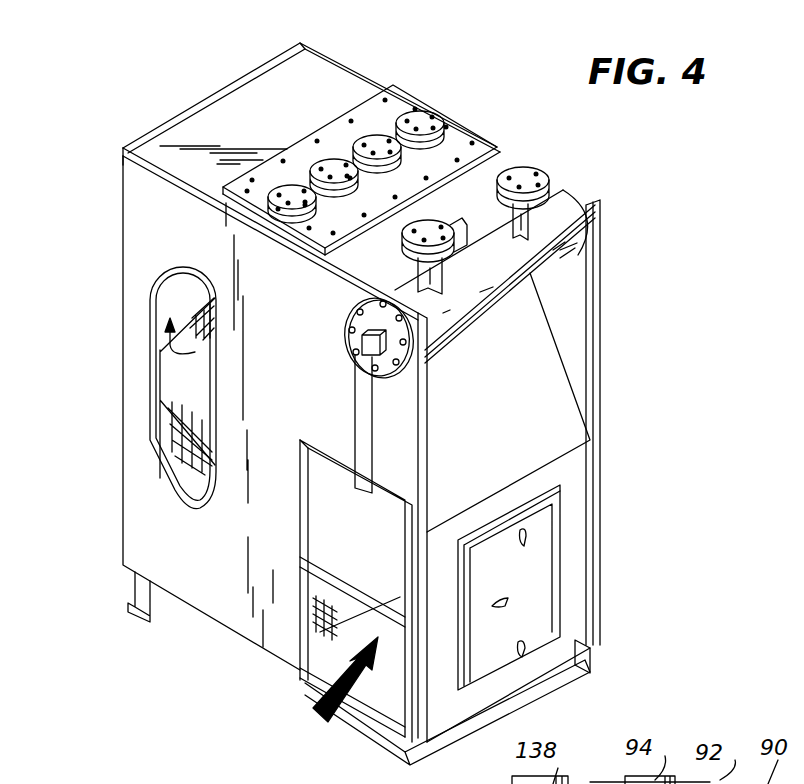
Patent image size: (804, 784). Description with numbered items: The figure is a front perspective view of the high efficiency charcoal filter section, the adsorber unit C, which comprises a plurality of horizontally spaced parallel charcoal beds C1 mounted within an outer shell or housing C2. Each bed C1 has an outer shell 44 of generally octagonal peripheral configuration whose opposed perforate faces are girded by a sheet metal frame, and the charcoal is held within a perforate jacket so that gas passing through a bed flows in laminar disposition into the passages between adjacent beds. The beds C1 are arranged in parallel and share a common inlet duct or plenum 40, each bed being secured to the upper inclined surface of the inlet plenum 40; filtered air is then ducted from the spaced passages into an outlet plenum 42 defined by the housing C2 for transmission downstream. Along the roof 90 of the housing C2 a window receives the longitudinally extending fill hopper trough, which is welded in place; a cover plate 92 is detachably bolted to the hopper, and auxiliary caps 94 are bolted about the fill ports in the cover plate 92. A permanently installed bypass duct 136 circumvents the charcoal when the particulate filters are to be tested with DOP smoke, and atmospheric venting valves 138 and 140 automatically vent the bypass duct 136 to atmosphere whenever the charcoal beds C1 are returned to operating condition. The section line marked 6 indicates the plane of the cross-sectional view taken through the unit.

The inlet duct or plenum 40 is at (375, 690).
The outlet plenum 42 is at (175, 445).
The outer shell 44 is at (190, 328).
The roof 90 is at (268, 82).
The cover plate 92 is at (408, 100).
The auxiliary caps 94 is at (330, 160).
The bypass duct 136 is at (455, 318).
The atmospheric venting valve 138 is at (462, 242).
The atmospheric venting valve 140 is at (530, 177).
The section line 6 is at (132, 112).
The adsorber unit C is at (638, 238).
The charcoal beds C1 is at (198, 407).
The shell or housing C2 is at (123, 492).